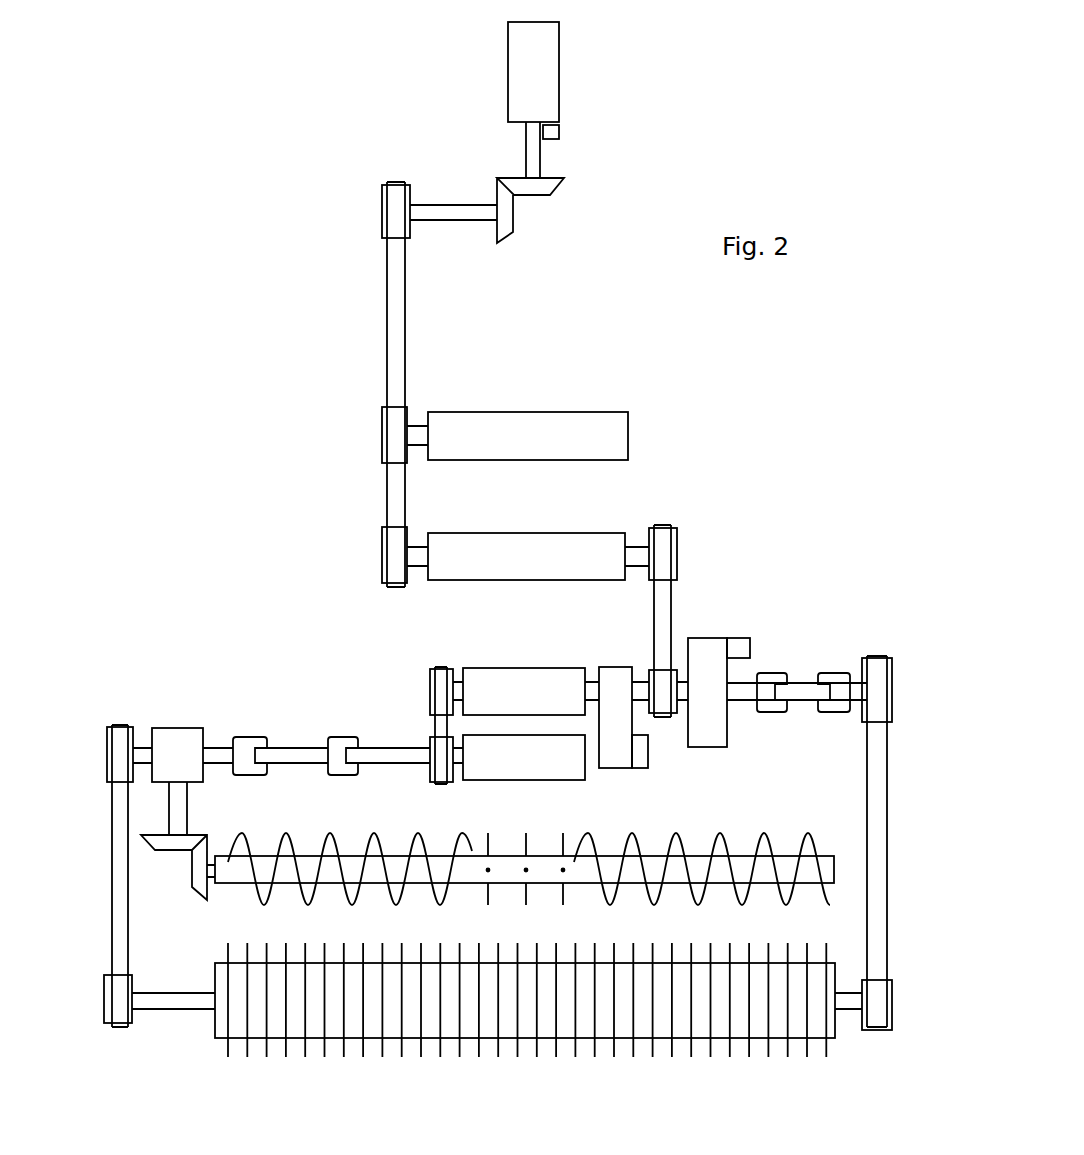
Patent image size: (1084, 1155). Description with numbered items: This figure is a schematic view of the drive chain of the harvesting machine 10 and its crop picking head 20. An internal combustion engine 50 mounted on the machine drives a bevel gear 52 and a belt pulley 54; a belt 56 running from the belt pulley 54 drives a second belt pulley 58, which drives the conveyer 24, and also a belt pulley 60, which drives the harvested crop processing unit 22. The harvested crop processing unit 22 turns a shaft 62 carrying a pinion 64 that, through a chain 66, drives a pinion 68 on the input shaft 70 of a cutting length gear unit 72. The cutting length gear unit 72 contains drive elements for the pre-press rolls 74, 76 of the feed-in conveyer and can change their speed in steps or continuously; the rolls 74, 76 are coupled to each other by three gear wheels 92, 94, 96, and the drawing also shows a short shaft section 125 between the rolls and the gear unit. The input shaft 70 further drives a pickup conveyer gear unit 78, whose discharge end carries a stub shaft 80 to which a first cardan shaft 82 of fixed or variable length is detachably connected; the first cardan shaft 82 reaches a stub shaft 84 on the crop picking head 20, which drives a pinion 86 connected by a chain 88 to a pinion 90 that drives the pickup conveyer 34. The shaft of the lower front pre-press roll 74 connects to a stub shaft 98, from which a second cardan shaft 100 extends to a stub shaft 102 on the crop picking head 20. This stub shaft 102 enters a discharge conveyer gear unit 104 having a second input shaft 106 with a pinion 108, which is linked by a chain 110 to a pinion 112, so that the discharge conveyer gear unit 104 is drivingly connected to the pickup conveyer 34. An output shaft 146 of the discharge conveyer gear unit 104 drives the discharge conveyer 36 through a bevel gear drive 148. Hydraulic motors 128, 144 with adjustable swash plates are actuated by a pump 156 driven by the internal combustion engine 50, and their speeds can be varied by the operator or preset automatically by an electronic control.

The harvesting machine 10 is at (770, 358).
The crop picking head 20 is at (903, 916).
The harvested crop processing unit 22 is at (490, 540).
The conveyer 24 is at (620, 432).
The pickup conveyer 34 is at (488, 1040).
The discharge conveyer 36 is at (600, 872).
The internal combustion engine 50 is at (548, 79).
The bevel gear 52 is at (534, 222).
The belt pulley 54 is at (382, 203).
The belt 56 is at (395, 313).
The second belt pulley 58 is at (393, 434).
The belt pulley 60 is at (382, 540).
The shaft 62 is at (640, 553).
The pinion 64 is at (675, 556).
The chain 66 is at (655, 605).
The pinion 68 is at (673, 672).
The input shaft 70 is at (641, 690).
The cutting length gear unit 72 is at (613, 757).
The lower front pre-press roll 74 is at (515, 770).
The pre-press roll 76 is at (470, 680).
The pickup conveyer gear unit 78 is at (710, 735).
The stub shaft 80 is at (740, 693).
The first cardan shaft 82 is at (803, 692).
The stub shaft 84 is at (857, 690).
The pinion 86 is at (893, 690).
The chain 88 is at (878, 845).
The pinion 90 is at (885, 1005).
The gear wheel 92 is at (428, 695).
The gear wheel 94 is at (430, 725).
The gear wheel 96 is at (430, 777).
The stub shaft 98 is at (387, 755).
The second cardan shaft 100 is at (295, 755).
The stub shaft 102 is at (228, 755).
The discharge conveyer gear unit 104 is at (172, 745).
The second input shaft 106 is at (142, 747).
The pinion 108 is at (108, 747).
The chain 110 is at (117, 858).
The pinion 112 is at (105, 1003).
The shaft 125 is at (592, 688).
The hydraulic motor 128 is at (642, 755).
The hydraulic motor 144 is at (738, 648).
The output shaft 146 is at (178, 808).
The bevel gear drive 148 is at (180, 870).
The pump 156 is at (559, 132).